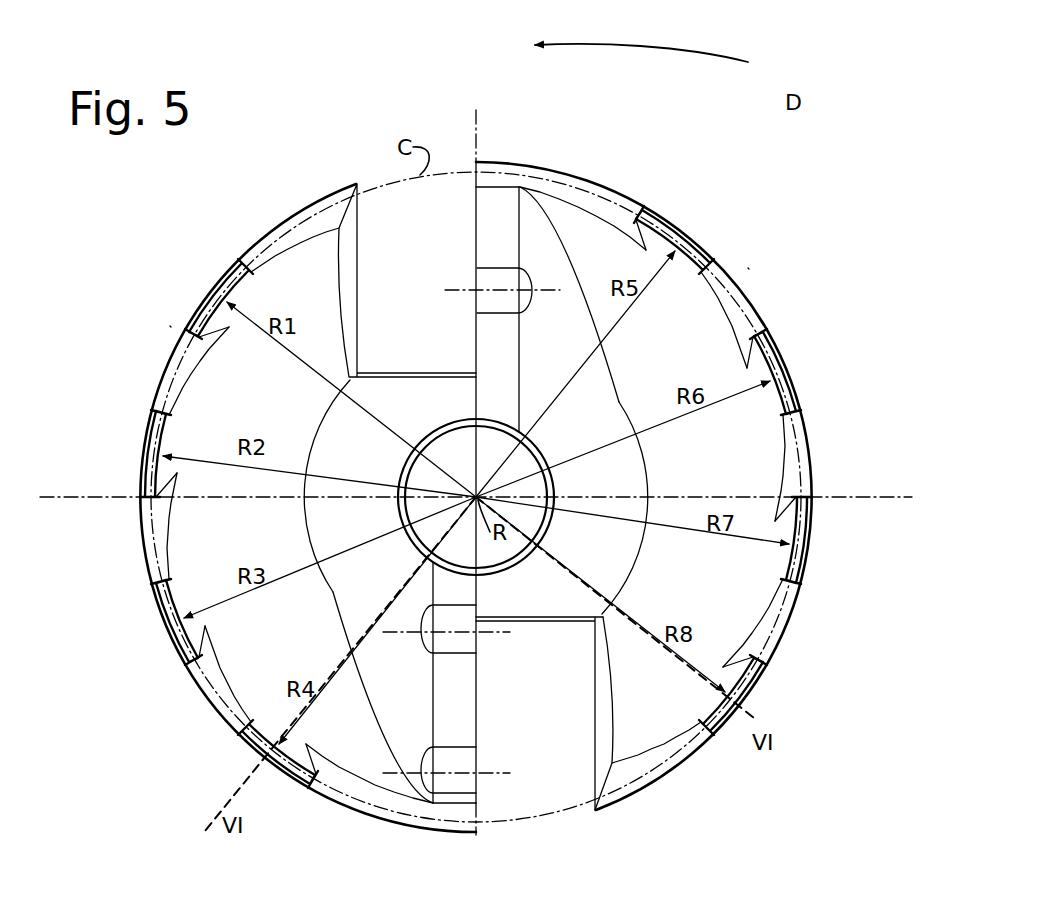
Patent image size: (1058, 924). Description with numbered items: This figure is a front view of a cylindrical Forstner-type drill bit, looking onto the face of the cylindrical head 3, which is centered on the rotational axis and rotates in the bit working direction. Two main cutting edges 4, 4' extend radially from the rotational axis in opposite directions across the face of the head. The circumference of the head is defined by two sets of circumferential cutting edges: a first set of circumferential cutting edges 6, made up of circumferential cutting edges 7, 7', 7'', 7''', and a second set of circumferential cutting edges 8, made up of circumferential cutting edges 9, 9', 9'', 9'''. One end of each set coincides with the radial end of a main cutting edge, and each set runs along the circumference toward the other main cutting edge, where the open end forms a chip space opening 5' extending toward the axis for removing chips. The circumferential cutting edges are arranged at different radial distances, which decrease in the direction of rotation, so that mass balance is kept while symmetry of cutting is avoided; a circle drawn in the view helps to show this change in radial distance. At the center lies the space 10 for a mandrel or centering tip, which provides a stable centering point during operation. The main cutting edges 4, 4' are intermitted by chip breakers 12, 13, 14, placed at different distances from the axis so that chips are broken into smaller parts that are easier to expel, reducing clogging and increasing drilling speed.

The cylindrical head 3 is at (292, 206).
The main cutting edge 4 is at (407, 242).
The main cutting edge 4' is at (539, 744).
The chip space opening 5' is at (598, 740).
The first set of circumferential cutting edges 6 is at (750, 268).
The circumferential cutting edge 7 is at (676, 227).
The circumferential cutting edge 7' is at (798, 372).
The circumferential cutting edge 7'' is at (830, 540).
The circumferential cutting edge 7''' is at (765, 695).
The second set of circumferential cutting edges 8 is at (170, 326).
The circumferential cutting edge 9 is at (213, 284).
The circumferential cutting edge 9' is at (133, 453).
The circumferential cutting edge 9'' is at (150, 622).
The circumferential cutting edge 9''' is at (262, 761).
The space for positioning a mandrel or centering tip 10 is at (476, 463).
The chip breaker 12 is at (484, 284).
The chip breaker 13 is at (480, 633).
The chip breaker 14 is at (478, 752).